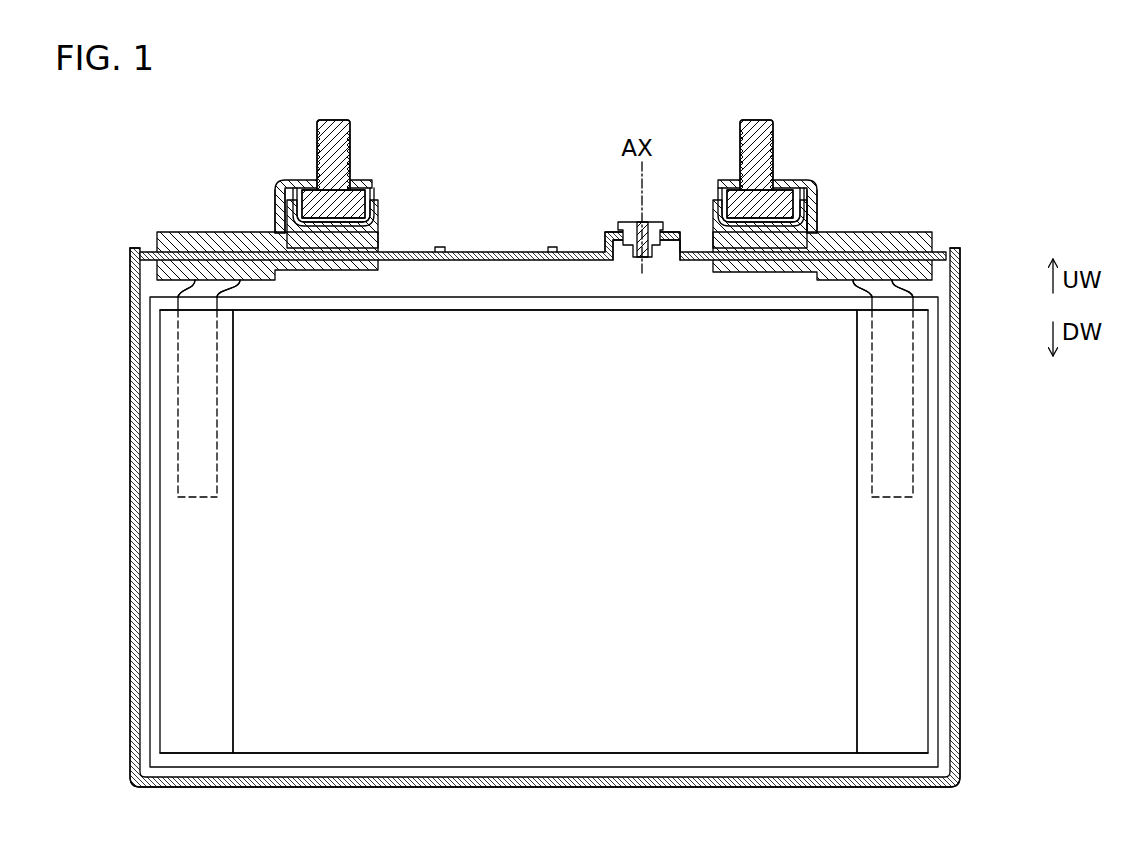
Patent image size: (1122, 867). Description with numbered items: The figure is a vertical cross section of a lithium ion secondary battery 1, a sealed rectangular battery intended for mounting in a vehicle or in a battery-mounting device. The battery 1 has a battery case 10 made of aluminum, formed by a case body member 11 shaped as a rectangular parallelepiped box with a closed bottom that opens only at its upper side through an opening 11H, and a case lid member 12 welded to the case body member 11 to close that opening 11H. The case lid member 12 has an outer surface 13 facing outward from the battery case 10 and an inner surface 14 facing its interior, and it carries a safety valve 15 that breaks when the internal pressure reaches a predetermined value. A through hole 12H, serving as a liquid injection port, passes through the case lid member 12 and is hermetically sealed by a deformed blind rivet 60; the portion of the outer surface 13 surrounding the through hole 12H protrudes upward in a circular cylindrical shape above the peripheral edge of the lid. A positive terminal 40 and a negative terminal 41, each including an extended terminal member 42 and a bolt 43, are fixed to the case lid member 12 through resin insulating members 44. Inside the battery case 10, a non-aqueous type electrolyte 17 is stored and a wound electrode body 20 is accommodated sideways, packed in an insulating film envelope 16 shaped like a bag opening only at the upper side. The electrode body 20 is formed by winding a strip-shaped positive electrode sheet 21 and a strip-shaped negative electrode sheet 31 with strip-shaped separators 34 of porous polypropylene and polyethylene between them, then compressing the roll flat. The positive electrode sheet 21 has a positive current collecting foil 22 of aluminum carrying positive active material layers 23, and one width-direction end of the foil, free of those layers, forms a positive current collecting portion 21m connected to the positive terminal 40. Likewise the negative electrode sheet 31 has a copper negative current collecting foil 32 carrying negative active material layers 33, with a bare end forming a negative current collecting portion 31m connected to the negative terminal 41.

The lithium ion secondary battery 1 is at (962, 234).
The battery case 10 is at (545, 535).
The case body member 11 is at (465, 783).
The opening 11H is at (130, 250).
The case lid member 12 is at (420, 251).
The through hole 12H is at (648, 224).
The outer surface 13 is at (682, 248).
The inner surface 14 is at (678, 262).
The safety valve 15 is at (530, 250).
The insulating film envelope 16 is at (483, 297).
The non-aqueous type electrolyte 17 is at (283, 720).
The wound electrode body 20 is at (725, 705).
The positive electrode sheet 21 is at (178, 600).
The positive current collecting portion 21m is at (178, 693).
The positive current collecting foil 22 is at (178, 646).
The positive active material layer 23 is at (530, 730).
The negative electrode sheet 31 is at (912, 600).
The negative current collecting portion 31m is at (912, 693).
The negative current collecting foil 32 is at (912, 646).
The negative active material layer 33 is at (795, 727).
The separator 34 is at (635, 705).
The positive terminal 40 is at (282, 181).
The negative terminal 41 is at (812, 181).
The extended terminal member 42 is at (272, 210).
The bolt 43 is at (317, 138).
The insulating member 44 is at (378, 218).
The deformed blind rivet 60 is at (622, 226).